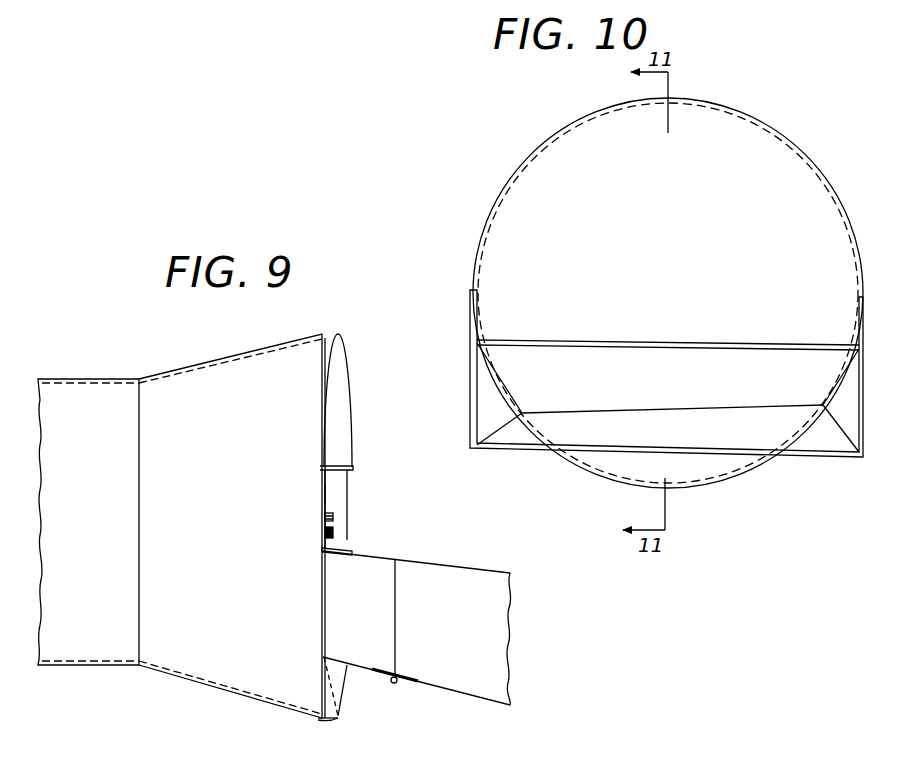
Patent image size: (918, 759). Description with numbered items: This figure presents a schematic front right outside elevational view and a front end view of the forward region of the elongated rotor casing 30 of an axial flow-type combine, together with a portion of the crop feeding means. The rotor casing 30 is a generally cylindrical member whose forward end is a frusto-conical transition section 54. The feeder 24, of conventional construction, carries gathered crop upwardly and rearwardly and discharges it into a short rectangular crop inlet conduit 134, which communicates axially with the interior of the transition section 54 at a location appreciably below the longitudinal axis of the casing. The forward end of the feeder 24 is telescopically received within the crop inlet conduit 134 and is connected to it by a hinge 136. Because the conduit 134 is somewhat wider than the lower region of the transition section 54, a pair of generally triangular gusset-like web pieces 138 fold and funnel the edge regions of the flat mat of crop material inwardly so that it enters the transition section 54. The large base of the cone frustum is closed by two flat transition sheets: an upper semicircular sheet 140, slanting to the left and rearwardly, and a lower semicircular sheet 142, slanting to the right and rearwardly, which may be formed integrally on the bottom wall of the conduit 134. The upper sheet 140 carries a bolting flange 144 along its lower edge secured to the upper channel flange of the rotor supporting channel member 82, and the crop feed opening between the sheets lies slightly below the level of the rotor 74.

In FIG. 9, the feeder 24 is at (455, 566).
In FIG. 9, the rotor casing 30 is at (105, 670).
In FIG. 9, the frusto-conical transition section 54 is at (240, 698).
In FIG. 9, the rotor 74 is at (335, 520).
In FIG. 9, the rotor supporting channel member 82 is at (331, 497).
In FIG. 9, the crop inlet conduit 134 is at (368, 664).
In FIG. 9, the hinge 136 is at (396, 683).
In FIG. 10, the gusset-like web pieces 138 is at (487, 396).
In FIG. 9, the upper semicircular sheet 140 is at (340, 412).
In FIG. 10, the upper semicircular sheet 140 is at (510, 195).
In FIG. 9, the lower semicircular sheet 142 is at (334, 697).
In FIG. 10, the lower semicircular sheet 142 is at (693, 470).
In FIG. 9, the bolting flange 144 is at (340, 549).